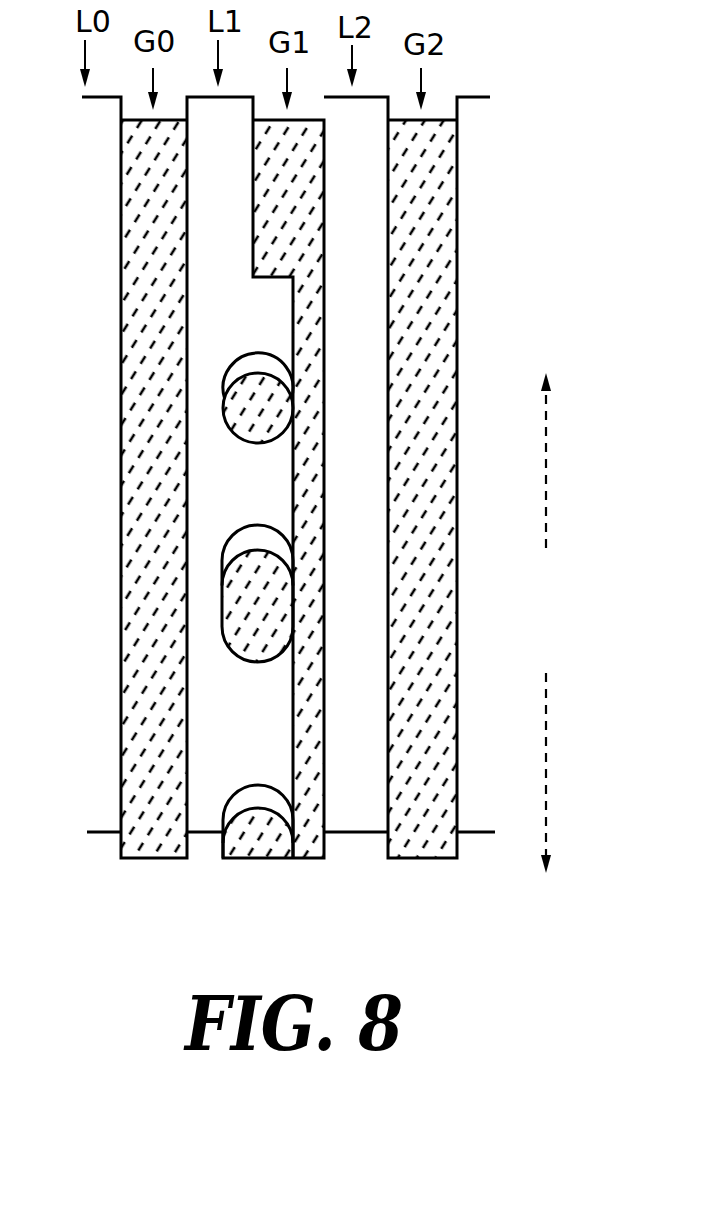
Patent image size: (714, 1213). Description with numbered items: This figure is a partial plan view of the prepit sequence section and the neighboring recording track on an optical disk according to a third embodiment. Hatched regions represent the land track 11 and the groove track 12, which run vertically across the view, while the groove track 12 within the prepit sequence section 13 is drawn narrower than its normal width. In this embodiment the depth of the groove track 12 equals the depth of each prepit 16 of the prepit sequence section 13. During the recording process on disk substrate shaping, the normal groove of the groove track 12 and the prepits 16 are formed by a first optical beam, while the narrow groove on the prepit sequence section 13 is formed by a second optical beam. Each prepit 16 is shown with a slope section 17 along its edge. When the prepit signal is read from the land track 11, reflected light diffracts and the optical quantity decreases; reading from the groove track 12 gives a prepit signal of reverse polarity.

The land track 11 is at (350, 208).
The groove track 12 is at (307, 333).
The prepit sequence section 13 is at (545, 623).
The prepit 16 is at (243, 422).
The slope section 17 is at (237, 372).